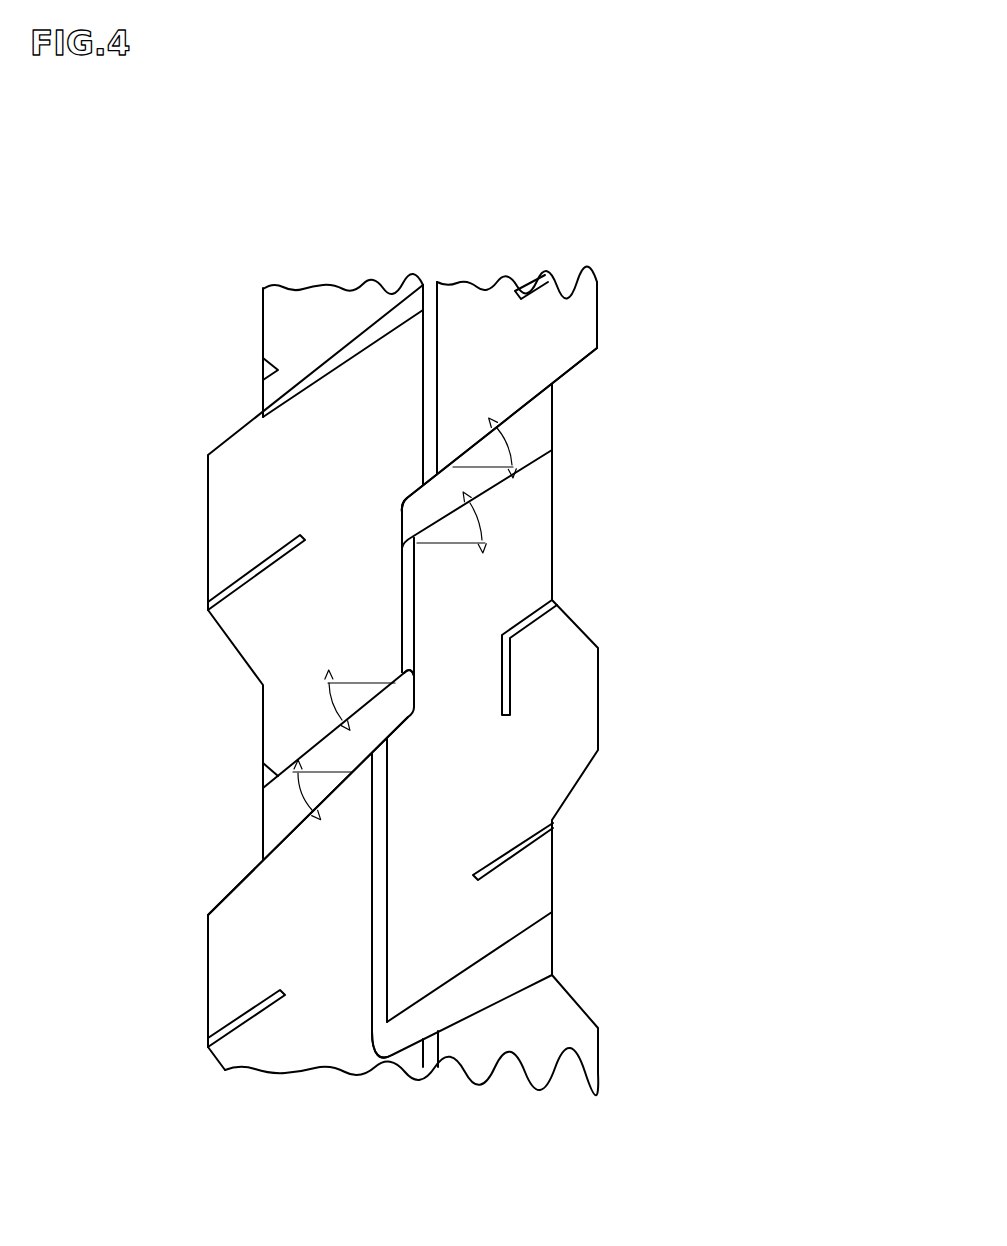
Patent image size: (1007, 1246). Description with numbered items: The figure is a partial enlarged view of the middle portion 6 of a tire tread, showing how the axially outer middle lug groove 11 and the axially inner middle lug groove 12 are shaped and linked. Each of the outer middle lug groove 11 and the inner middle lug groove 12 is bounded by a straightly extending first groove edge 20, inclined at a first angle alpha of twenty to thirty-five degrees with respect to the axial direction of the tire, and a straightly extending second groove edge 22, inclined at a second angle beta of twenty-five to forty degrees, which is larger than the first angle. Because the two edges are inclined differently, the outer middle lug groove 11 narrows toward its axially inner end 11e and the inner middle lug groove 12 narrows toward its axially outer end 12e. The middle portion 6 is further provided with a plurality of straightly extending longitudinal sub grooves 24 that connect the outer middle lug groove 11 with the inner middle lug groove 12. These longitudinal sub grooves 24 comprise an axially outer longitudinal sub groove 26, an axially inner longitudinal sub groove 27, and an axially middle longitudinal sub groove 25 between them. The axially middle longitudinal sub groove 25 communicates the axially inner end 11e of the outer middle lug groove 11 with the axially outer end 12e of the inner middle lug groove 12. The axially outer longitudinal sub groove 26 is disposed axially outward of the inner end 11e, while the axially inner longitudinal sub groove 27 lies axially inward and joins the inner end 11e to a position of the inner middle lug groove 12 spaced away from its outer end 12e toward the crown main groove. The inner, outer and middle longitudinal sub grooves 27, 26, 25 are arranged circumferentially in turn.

The middle portion 6 is at (472, 317).
The axially outer middle lug groove 11 is at (542, 417).
The axially inner end of the outer middle lug groove 11e is at (403, 519).
The axially inner middle lug groove 12 is at (315, 363).
The axially outer end of the inner middle lug groove 12e is at (415, 688).
The first groove edge 20 is at (503, 478).
The second groove edge 22 is at (518, 393).
The longitudinal sub grooves 24 is at (750, 275).
The axially middle longitudinal sub groove 25 is at (408, 622).
The axially outer longitudinal sub groove 26 is at (433, 377).
The axially inner longitudinal sub groove 27 is at (378, 865).